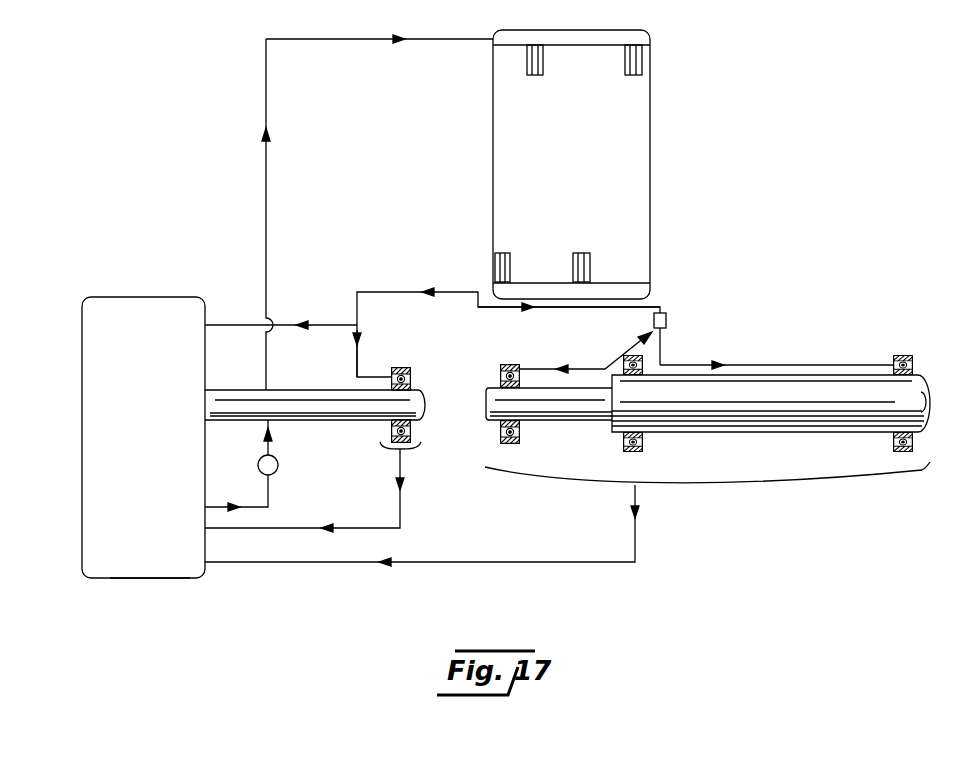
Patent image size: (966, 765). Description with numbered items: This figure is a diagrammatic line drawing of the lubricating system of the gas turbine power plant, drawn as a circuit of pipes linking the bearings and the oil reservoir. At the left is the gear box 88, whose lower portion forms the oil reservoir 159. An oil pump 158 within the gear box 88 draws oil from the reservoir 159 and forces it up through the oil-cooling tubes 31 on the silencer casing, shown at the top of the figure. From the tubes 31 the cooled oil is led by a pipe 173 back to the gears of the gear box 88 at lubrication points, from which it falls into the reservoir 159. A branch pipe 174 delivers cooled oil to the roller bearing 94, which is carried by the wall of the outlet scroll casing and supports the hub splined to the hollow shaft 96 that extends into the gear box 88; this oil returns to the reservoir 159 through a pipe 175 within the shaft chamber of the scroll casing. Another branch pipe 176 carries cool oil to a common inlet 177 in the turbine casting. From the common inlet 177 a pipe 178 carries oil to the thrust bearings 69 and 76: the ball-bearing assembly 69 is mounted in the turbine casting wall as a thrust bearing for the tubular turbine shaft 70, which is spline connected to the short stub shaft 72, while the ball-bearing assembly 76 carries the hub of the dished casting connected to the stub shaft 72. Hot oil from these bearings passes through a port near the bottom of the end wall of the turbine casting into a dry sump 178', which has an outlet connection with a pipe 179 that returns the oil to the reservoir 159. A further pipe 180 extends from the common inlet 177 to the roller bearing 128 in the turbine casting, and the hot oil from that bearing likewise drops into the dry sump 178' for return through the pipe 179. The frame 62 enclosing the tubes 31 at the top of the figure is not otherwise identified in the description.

The oil-cooling tubes 31 is at (625, 65).
The frame 62 is at (650, 38).
The ball-bearing assembly 69 is at (636, 452).
The tubular turbine shaft 70 is at (826, 381).
The stub shaft 72 is at (570, 422).
The ball-bearing assembly 76 is at (510, 444).
The gear box 88 is at (114, 297).
The roller bearing 94 is at (407, 370).
The hollow shaft 96 is at (301, 390).
The roller bearing 128 is at (900, 357).
The oil pump 158 is at (278, 466).
The oil reservoir 159 is at (155, 578).
The pipe 173 is at (357, 305).
The branch pipe 174 is at (357, 358).
The pipe 175 is at (293, 528).
The branch pipe 176 is at (582, 308).
The common inlet 177 is at (666, 320).
The pipe 178 is at (580, 352).
The dry sump 178' is at (707, 489).
The pipe 179 is at (645, 560).
The pipe 180 is at (750, 365).